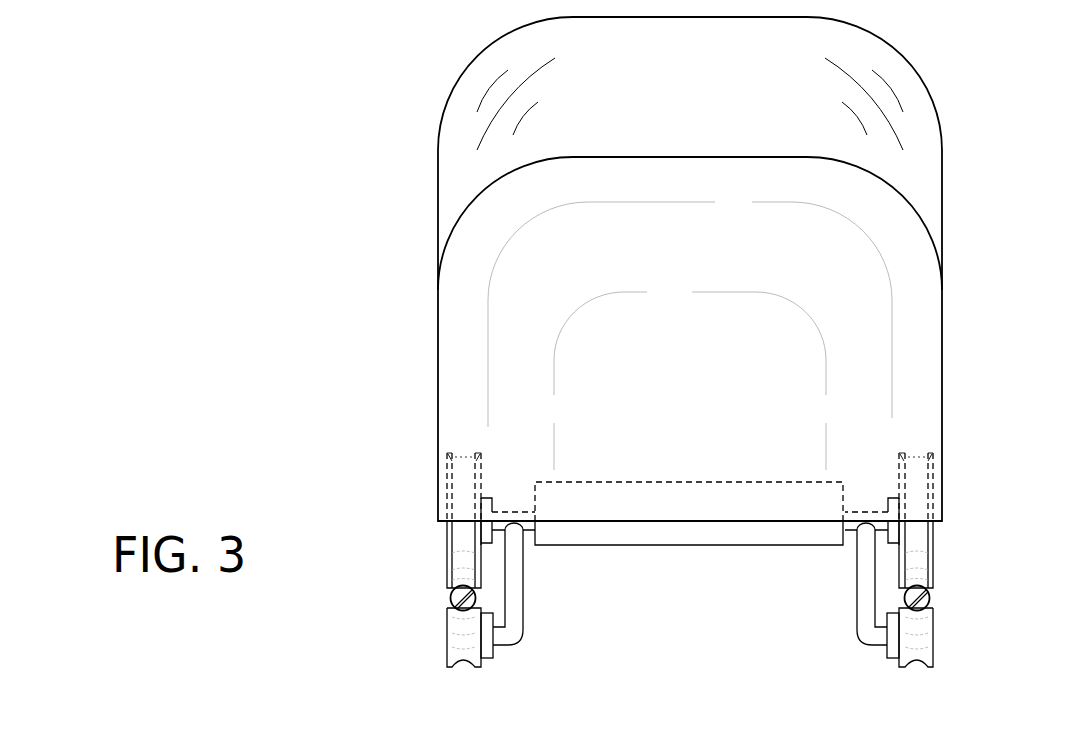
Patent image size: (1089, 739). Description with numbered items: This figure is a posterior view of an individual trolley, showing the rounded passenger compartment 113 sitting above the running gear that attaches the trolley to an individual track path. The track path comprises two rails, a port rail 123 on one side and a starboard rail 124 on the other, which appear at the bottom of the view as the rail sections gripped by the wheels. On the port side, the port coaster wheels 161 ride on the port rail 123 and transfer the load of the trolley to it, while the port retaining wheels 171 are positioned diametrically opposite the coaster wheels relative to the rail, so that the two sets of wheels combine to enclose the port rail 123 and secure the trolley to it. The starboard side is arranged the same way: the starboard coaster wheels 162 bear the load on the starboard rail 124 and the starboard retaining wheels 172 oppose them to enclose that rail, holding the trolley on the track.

The passenger compartment 113 is at (907, 364).
The port coaster wheels 161 is at (448, 540).
The starboard coaster wheels 162 is at (933, 538).
The port rail 123 is at (450, 598).
The starboard rail 124 is at (930, 598).
The port retaining wheels 171 is at (448, 643).
The starboard retaining wheels 172 is at (933, 636).